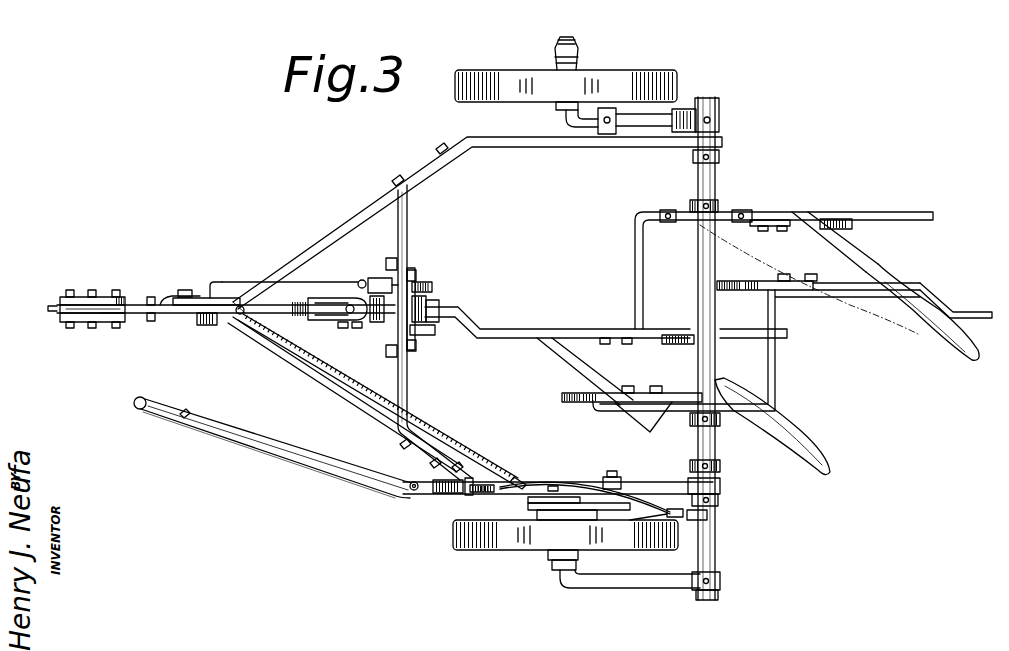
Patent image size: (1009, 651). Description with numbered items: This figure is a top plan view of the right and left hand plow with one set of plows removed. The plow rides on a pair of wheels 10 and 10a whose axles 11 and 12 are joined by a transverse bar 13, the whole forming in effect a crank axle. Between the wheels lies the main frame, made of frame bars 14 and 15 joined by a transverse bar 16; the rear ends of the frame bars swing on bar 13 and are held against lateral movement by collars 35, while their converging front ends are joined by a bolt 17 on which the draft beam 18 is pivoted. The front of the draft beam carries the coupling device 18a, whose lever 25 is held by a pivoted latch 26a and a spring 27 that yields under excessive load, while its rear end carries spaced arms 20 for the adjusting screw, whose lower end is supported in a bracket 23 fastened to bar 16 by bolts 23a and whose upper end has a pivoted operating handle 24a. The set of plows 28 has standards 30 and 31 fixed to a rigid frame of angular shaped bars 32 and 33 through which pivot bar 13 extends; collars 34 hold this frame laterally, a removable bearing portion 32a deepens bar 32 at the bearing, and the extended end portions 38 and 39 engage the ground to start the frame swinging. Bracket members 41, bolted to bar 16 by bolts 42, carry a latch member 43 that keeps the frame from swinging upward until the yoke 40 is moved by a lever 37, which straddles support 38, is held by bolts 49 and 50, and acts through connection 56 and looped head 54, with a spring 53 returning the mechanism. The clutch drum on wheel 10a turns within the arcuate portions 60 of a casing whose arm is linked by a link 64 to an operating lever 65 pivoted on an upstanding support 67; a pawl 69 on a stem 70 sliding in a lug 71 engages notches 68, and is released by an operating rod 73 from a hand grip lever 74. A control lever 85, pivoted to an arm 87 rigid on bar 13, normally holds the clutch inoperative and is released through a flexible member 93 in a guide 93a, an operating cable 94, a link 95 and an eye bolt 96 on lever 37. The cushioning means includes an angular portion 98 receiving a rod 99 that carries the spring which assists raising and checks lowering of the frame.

The wheel 10 is at (615, 62).
The wheel 10a is at (505, 560).
The axle 11 is at (650, 127).
The axle 12 is at (655, 605).
The transverse bar 13 is at (740, 168).
The frame bar 14 is at (352, 200).
The frame bar 15 is at (330, 412).
The transverse bar 16 is at (408, 230).
The bolt 17 is at (212, 248).
The draft beam 18 is at (178, 314).
The coupling device 18a is at (112, 322).
The spaced arms 20 is at (330, 300).
The bracket 23 is at (372, 322).
The bolts 23a is at (378, 368).
The operating handle 24a is at (350, 326).
The lever 25 is at (50, 312).
The pivoted latch 26a is at (86, 320).
The spring 27 is at (116, 296).
The set of plows 28 is at (935, 330).
The standards 30 is at (858, 226).
The standards 31 is at (740, 291).
The angular shaped bar 32 is at (636, 265).
The removable bearing portion 32a is at (722, 214).
The angular shaped bar 33 is at (777, 362).
The collars 34 is at (722, 426).
The collars or brackets 35 is at (722, 466).
The lever 37 is at (230, 298).
The extended end portion 38 is at (168, 297).
The extended end portion 39 is at (980, 312).
The yoke 40 is at (445, 312).
The bracket members 41 is at (435, 335).
The bolts 42 is at (412, 270).
The latch member 43 is at (430, 305).
The bolt 49 is at (150, 297).
The bolt 50 is at (186, 290).
The spring 53 is at (422, 284).
The looped head 54 is at (372, 280).
The forwardly extending connection 56 is at (300, 282).
The arcuate portions 60 is at (598, 518).
The link 64 is at (553, 496).
The operating lever 65 is at (372, 488).
The upstanding support 67 is at (518, 495).
The notches 68 is at (470, 495).
The pawl 69 is at (470, 484).
The stem 70 is at (433, 484).
The lug 71 is at (445, 480).
The operating rod 73 is at (352, 470).
The hand grip lever 74 is at (140, 412).
The control lever 85 is at (632, 520).
The arm 87 is at (682, 500).
The flexible member 93 is at (640, 486).
The guide 93a is at (582, 486).
The operating cable 94 is at (300, 352).
The link 95 is at (262, 282).
The eye bolt 96 is at (238, 318).
The angular portion 98 is at (598, 127).
The rod 99 is at (607, 124).